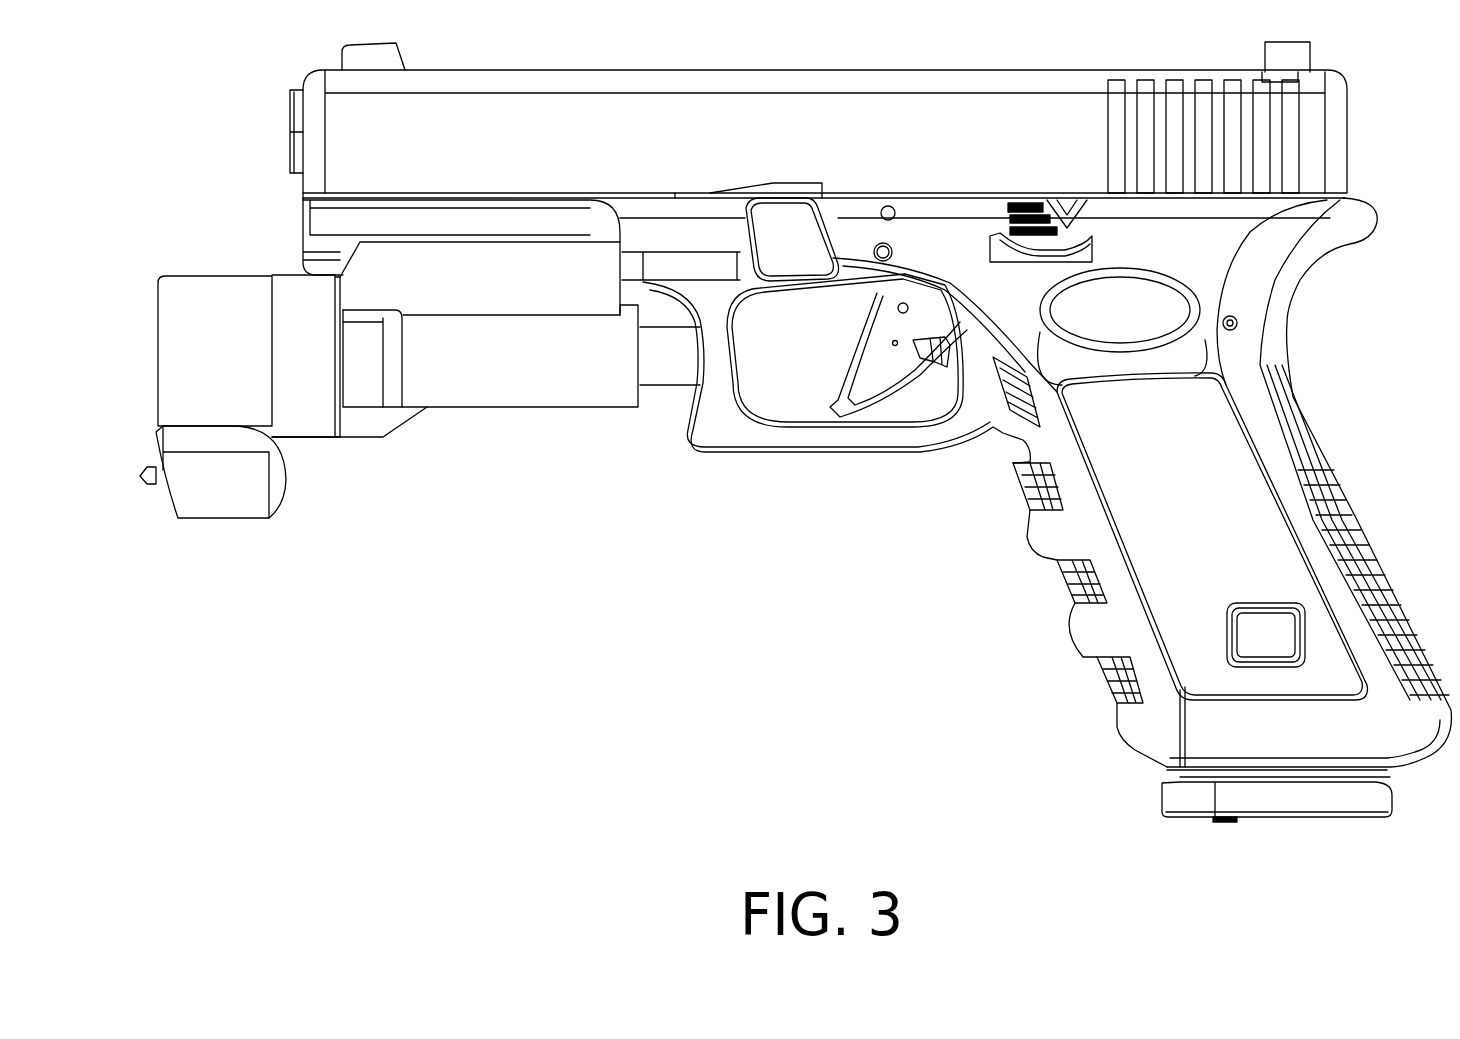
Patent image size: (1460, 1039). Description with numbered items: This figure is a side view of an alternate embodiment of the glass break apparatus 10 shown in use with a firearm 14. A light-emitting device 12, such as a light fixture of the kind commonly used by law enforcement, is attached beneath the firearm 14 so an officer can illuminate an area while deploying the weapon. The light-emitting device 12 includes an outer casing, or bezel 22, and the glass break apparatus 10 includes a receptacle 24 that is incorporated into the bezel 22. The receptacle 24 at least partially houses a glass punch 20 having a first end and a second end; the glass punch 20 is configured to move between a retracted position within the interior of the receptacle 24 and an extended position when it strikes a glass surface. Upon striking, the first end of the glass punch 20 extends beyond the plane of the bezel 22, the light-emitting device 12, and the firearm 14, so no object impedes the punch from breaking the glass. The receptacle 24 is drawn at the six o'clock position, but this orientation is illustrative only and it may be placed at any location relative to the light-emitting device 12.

The glass break apparatus 10 is at (358, 361).
The light-emitting device 12 is at (301, 424).
The firearm 14 is at (802, 176).
The glass punch 20 is at (117, 462).
The bezel 22 is at (176, 363).
The receptacle 24 is at (182, 517).